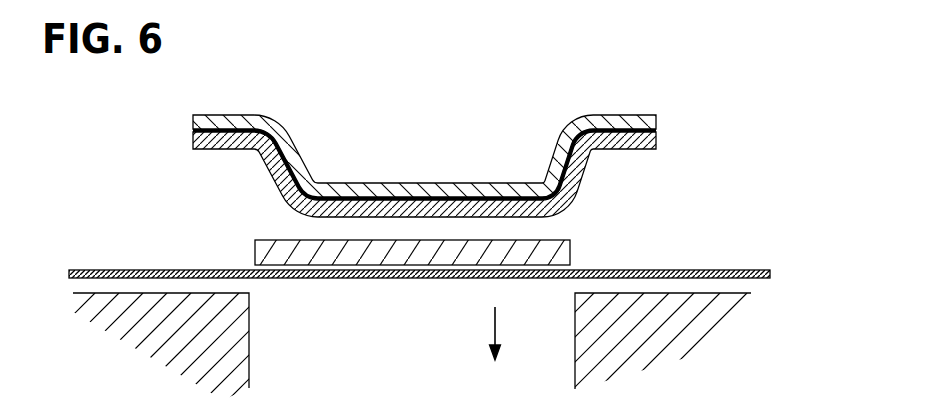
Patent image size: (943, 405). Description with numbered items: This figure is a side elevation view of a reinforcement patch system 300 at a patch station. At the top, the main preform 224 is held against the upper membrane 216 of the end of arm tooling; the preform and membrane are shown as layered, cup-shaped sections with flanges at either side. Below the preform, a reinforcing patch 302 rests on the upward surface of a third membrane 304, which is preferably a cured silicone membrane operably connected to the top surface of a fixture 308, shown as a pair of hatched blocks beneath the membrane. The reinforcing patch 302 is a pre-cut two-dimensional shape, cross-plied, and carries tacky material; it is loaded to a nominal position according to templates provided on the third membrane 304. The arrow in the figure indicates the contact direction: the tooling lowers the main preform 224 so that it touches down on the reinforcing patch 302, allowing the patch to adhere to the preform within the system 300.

The upper membrane 216 is at (618, 123).
The main preform 224 is at (646, 138).
The reinforcement patch system 300 is at (427, 139).
The reinforcing patch 302 is at (572, 253).
The third membrane 304 is at (745, 270).
The fixture 308 is at (733, 293).